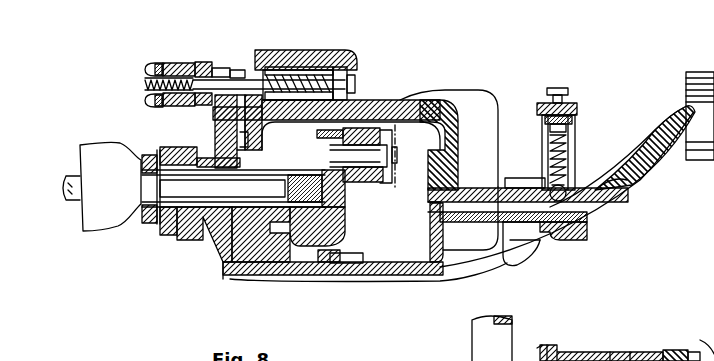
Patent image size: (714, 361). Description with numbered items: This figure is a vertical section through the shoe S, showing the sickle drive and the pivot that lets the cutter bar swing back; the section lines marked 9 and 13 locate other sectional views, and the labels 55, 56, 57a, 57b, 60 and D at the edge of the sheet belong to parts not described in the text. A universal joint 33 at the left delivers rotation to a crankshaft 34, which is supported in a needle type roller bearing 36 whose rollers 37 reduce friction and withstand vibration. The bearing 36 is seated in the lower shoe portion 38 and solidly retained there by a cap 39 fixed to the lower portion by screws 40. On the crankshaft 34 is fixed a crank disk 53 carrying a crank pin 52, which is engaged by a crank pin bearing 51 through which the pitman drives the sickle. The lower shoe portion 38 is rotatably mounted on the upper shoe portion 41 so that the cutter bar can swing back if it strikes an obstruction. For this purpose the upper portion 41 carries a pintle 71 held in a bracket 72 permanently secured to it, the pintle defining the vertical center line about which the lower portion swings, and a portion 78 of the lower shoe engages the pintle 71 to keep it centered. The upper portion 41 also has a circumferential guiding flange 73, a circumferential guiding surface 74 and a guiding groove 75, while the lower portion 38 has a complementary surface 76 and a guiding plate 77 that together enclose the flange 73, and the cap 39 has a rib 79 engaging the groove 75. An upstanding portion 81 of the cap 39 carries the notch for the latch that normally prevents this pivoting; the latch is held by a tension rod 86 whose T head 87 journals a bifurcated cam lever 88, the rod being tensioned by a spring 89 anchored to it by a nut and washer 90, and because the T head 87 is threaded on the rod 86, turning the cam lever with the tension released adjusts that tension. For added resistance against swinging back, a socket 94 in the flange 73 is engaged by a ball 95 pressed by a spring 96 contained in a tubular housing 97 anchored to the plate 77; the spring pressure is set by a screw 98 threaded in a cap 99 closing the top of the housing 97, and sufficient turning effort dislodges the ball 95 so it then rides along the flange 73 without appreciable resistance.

The section line 9- 9 is at (215, 133).
The section line 13- 13 is at (368, 107).
The universal joint 33 is at (100, 223).
The crankshaft 34 is at (173, 193).
The needle type roller bearing 36 is at (210, 222).
The rollers 37 is at (238, 215).
The lower shoe portion 38 is at (252, 262).
The cap 39 is at (210, 152).
The screws 40 is at (713, 56).
The upper shoe portion 41 is at (436, 114).
The crank pin bearing 51 is at (380, 138).
The crank pin 52 is at (393, 163).
The crank disk 53 is at (330, 222).
The base member 55 is at (630, 352).
The flange 56 is at (553, 345).
The plate portion 57a is at (592, 334).
The plate portion 57b is at (665, 336).
The bracket 60 is at (680, 350).
The pintle 71 is at (380, 280).
The bracket 72 is at (440, 244).
The circumferential guiding flange 73 is at (512, 252).
The circumferential guiding surface 74 is at (262, 236).
The guiding groove 75 is at (275, 150).
The surface 76 is at (552, 228).
The guiding plate 77 is at (627, 180).
The portion 78 is at (427, 280).
The rib 79 is at (237, 155).
The upstanding portion 81 is at (243, 70).
The tension rod 86 is at (148, 85).
The T head 87 is at (158, 63).
The bifurcated cam lever 88 is at (181, 63).
The spring 89 is at (300, 67).
The nut and washer 90 is at (352, 76).
The opening or socket 94 is at (547, 178).
The ball 95 is at (555, 208).
The spring 96 is at (572, 151).
The tubular housing 97 is at (542, 153).
The screw 98 is at (556, 88).
The cap 99 is at (537, 108).
The shoe S is at (598, 245).
The drum D is at (476, 342).